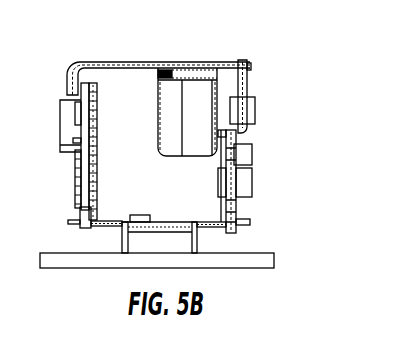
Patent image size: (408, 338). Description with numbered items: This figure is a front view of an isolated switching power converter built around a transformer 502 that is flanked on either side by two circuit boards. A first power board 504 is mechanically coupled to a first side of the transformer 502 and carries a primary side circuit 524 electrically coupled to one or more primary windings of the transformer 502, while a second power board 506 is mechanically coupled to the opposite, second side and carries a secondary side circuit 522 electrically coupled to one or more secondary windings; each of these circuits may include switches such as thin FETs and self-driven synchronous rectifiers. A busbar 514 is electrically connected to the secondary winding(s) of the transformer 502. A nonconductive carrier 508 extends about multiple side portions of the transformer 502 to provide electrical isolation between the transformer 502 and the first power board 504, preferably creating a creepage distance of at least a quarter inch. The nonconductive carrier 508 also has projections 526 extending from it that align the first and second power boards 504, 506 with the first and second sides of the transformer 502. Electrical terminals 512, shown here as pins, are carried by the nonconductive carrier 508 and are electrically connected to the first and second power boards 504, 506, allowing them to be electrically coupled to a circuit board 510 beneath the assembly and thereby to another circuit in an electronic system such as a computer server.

The transformer 502 is at (171, 108).
The first power board 504 is at (83, 212).
The second power board 506 is at (232, 205).
The nonconductive carrier 508 is at (126, 92).
The circuit board 510 is at (274, 262).
The electrical terminals 512 is at (120, 240).
The busbar 514 is at (225, 62).
The secondary side circuit 522 is at (235, 188).
The primary side circuit 524 is at (90, 183).
The projections 526 is at (70, 220).